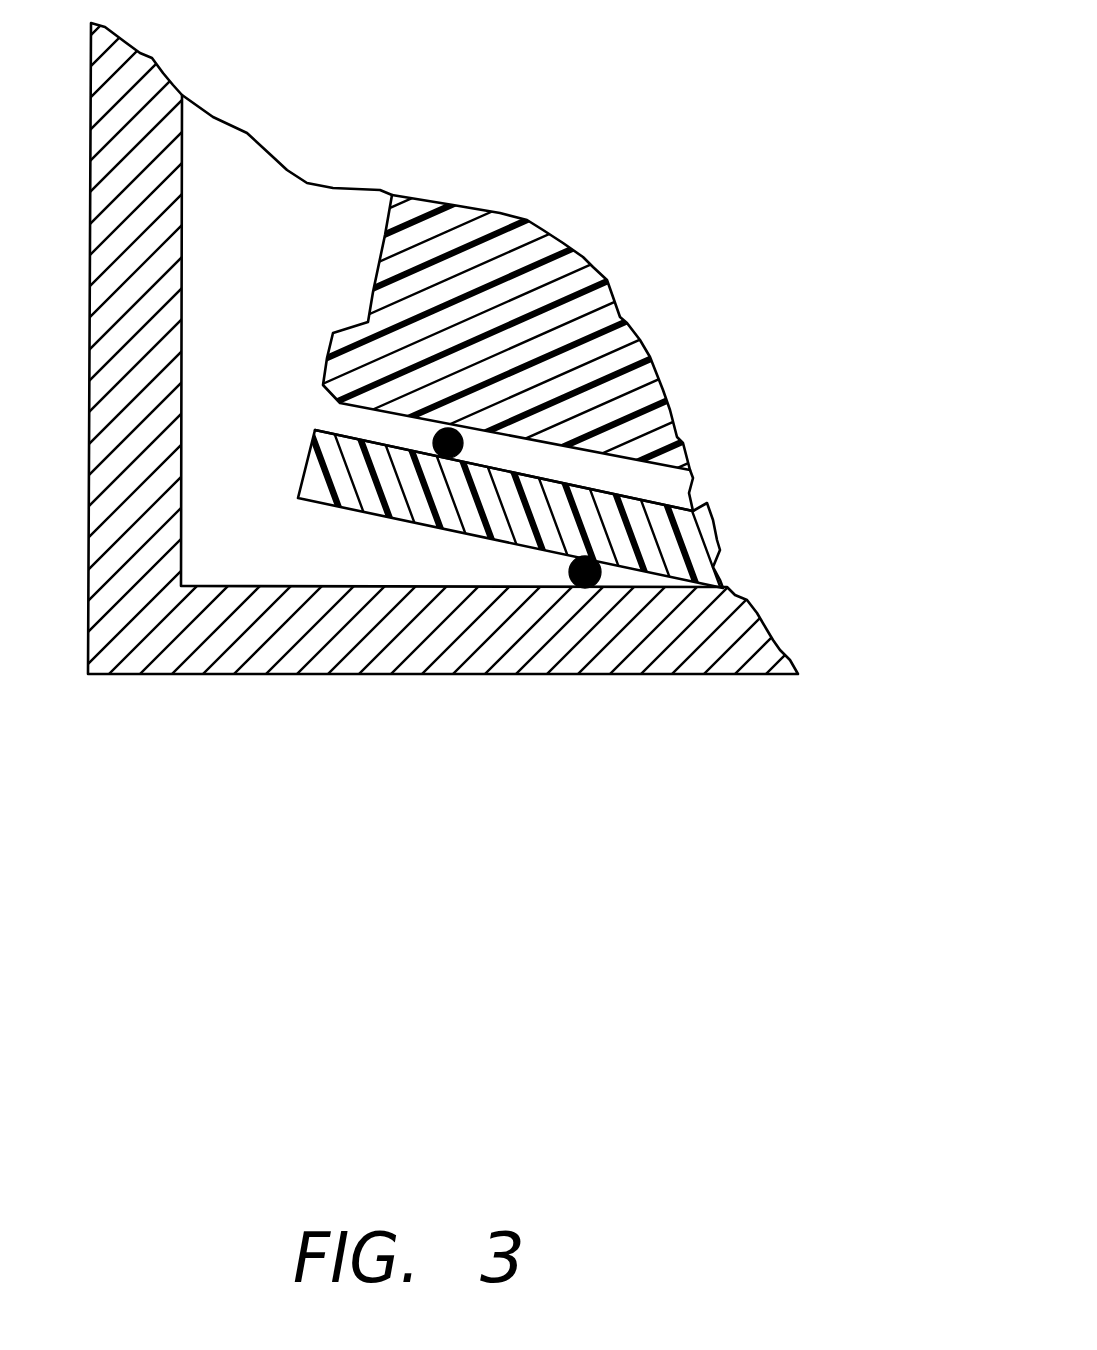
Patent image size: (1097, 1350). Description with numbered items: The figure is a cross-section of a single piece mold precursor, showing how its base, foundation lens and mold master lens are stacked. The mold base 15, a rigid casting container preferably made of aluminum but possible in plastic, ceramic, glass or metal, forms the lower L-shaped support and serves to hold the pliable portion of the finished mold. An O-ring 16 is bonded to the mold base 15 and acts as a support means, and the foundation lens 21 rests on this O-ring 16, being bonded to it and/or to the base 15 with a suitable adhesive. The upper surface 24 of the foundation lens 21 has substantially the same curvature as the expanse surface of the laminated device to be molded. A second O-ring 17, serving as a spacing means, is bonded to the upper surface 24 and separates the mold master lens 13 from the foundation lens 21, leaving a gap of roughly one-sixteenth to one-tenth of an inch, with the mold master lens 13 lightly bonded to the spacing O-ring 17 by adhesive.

The mold master lens 13 is at (517, 317).
The mold base 15 is at (175, 675).
The O-ring 16 is at (592, 588).
The second O-ring 17 is at (473, 433).
The foundation lens 21 is at (612, 497).
The upper surface 24 is at (557, 475).